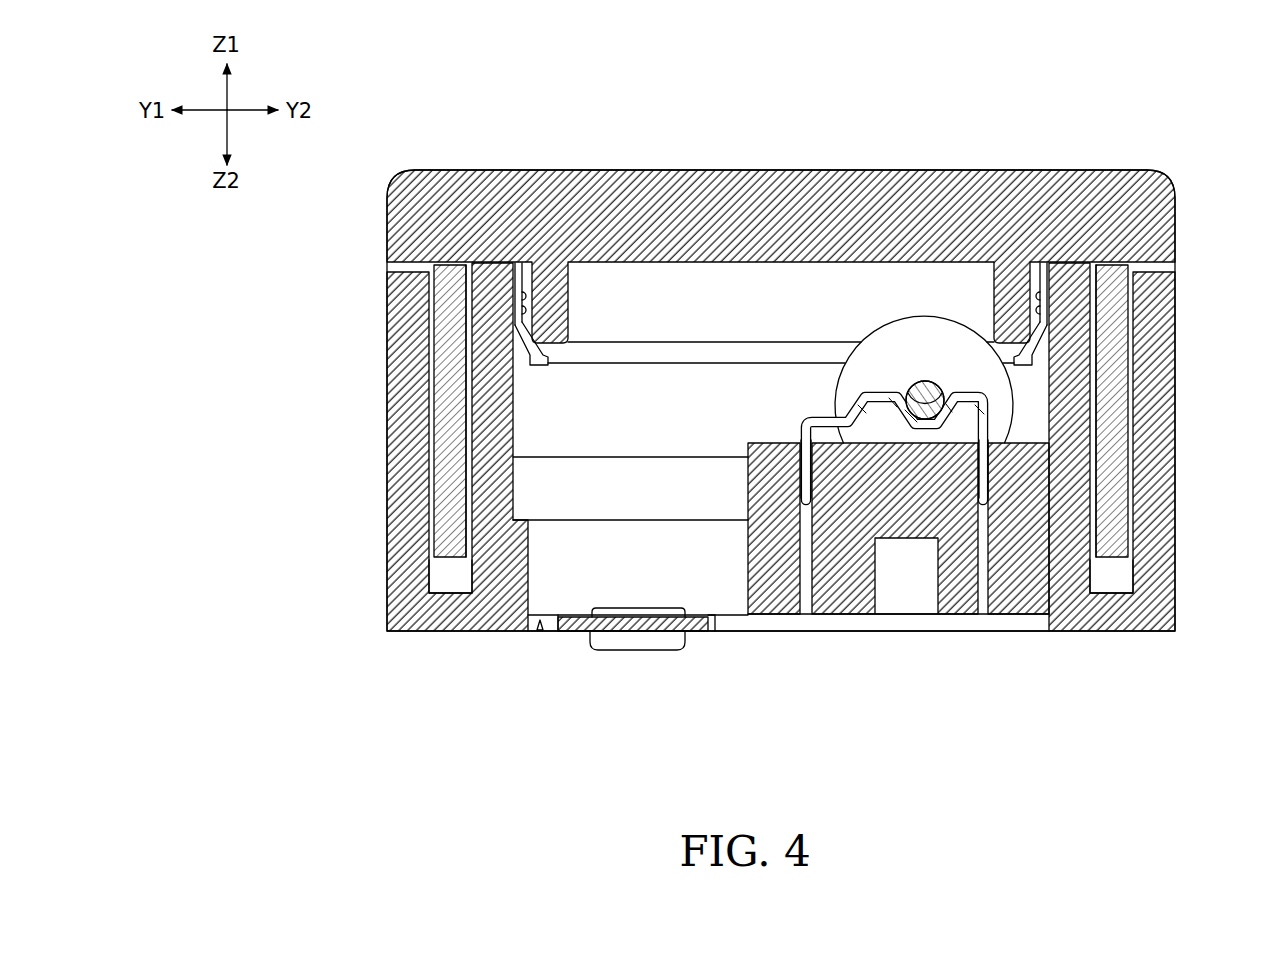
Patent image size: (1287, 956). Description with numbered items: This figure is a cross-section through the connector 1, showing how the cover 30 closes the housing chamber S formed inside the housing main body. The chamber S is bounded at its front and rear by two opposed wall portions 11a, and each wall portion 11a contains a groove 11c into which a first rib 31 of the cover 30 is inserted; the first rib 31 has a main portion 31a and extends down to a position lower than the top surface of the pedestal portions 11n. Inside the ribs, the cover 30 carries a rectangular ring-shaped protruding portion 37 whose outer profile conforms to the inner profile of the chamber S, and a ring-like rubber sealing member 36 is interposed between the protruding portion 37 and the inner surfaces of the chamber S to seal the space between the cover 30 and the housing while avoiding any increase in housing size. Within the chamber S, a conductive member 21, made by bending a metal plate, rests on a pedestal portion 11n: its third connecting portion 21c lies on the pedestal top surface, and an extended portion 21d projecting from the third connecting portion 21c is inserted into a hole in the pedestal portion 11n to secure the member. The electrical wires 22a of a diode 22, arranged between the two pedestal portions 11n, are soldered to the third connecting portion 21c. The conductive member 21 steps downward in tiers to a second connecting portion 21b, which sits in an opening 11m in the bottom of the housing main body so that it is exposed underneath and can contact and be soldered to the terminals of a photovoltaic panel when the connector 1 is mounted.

The connector 1 is at (1122, 128).
The cover 30 is at (759, 170).
The wall portion 11a is at (399, 380).
The groove 11c is at (450, 580).
The opening 11m is at (540, 631).
The pedestal portion 11n is at (1018, 437).
The first rib 31 is at (431, 488).
The main portion 31a is at (451, 428).
The sealing member 36 is at (518, 292).
The protruding portion 37 is at (574, 306).
The conductive member 21 is at (918, 403).
The second connecting portion 21b is at (638, 642).
The third connecting portion 21c is at (928, 428).
The extended portion 21d is at (847, 433).
The diode 22 is at (940, 330).
The electrical wire 22a is at (938, 378).
The housing chamber S is at (655, 423).